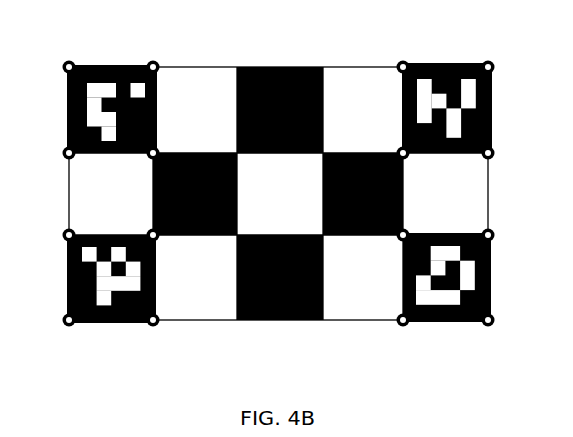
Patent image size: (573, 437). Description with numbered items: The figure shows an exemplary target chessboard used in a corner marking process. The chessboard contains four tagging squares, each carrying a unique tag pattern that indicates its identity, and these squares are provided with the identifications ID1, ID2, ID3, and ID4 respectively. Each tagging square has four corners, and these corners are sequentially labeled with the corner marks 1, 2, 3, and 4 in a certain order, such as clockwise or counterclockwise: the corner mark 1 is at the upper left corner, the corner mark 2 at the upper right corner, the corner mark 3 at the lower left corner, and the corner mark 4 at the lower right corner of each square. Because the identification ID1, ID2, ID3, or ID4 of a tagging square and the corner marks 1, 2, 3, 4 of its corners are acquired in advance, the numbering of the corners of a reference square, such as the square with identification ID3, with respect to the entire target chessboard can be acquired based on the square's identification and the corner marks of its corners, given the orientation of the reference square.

The corner mark ① 1 is at (219, 135).
The corner mark ② 2 is at (339, 136).
The corner mark ③ 3 is at (219, 222).
The corner mark ④ 4 is at (341, 222).
The identification ID1 is at (112, 91).
The identification ID2 is at (447, 87).
The identification ID3 is at (111, 309).
The identification ID4 is at (447, 308).